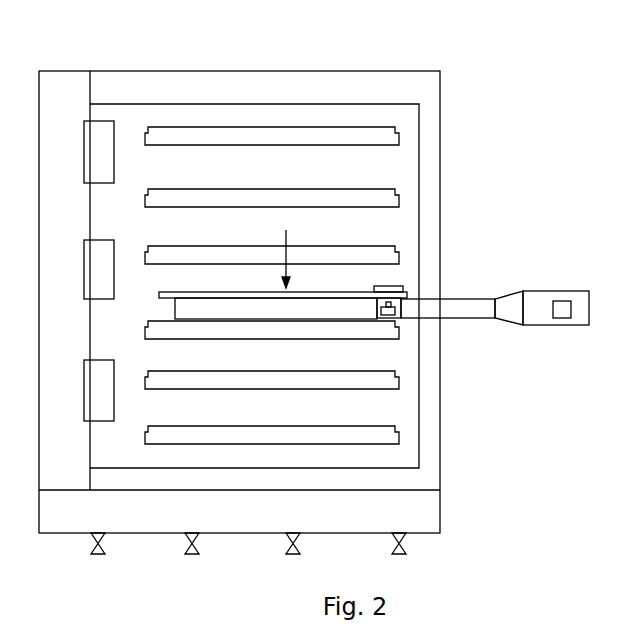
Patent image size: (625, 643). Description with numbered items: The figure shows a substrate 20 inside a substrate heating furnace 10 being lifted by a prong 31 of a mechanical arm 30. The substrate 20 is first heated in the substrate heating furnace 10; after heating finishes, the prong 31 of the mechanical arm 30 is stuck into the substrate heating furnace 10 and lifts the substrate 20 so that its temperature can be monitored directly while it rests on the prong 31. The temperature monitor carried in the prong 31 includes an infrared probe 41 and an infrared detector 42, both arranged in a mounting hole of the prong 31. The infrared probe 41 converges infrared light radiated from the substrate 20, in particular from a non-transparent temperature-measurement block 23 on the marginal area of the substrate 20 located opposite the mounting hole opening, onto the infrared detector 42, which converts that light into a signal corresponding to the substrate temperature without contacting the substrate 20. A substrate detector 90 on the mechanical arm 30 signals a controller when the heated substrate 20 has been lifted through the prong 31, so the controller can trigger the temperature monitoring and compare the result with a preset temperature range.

The substrate heating furnace 10 is at (232, 70).
The substrate 20 is at (401, 289).
The non-transparent temperature-measurement block 23 is at (392, 286).
The mechanical arm 30 is at (543, 303).
The prong 31 is at (480, 308).
The infrared probe 41 is at (401, 318).
The infrared detector 42 is at (393, 314).
The substrate detector 90 is at (567, 312).